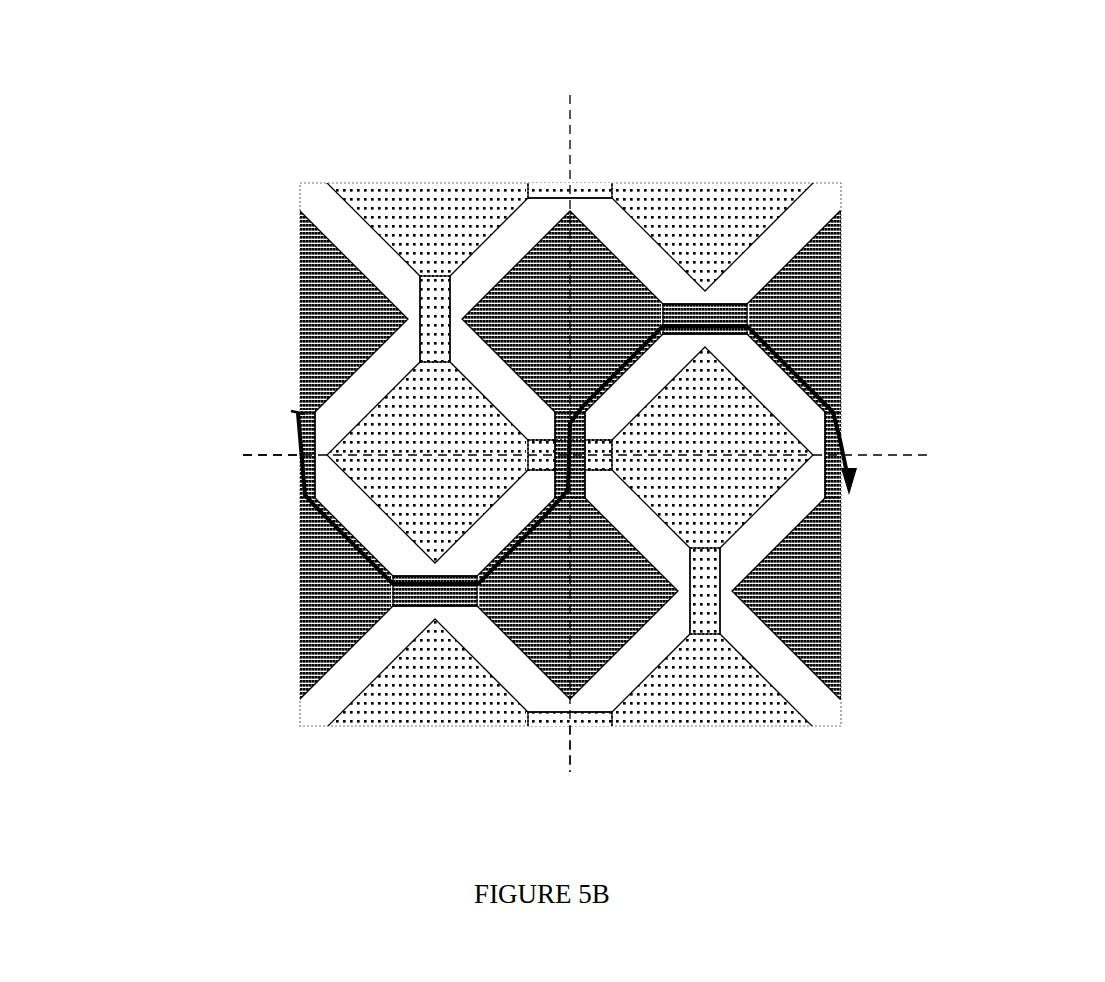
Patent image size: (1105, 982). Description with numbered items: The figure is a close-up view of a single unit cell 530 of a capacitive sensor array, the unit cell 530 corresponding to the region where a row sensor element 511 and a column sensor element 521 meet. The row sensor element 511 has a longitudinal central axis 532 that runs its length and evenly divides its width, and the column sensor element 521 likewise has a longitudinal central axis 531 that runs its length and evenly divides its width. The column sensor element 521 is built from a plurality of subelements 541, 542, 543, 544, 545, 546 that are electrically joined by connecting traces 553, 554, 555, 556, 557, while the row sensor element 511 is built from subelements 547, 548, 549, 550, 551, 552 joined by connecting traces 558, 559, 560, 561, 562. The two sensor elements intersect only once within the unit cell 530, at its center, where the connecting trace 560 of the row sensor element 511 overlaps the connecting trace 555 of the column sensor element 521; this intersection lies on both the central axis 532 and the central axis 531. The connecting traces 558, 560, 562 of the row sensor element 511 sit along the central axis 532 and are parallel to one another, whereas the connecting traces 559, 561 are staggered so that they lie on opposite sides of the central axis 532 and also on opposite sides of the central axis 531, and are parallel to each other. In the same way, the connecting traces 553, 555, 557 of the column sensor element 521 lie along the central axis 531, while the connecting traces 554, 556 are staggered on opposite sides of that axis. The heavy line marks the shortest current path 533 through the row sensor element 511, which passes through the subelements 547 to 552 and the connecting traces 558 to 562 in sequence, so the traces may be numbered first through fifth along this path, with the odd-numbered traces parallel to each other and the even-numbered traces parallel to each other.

The unit cell 530 is at (288, 183).
The longitudinal central axis 531 is at (572, 78).
The longitudinal central axis 532 is at (924, 457).
The row sensor element 511 is at (236, 457).
The column sensor element 521 is at (567, 764).
The shortest current path 533 is at (326, 546).
The subelement 541 is at (688, 221).
The subelement 542 is at (418, 221).
The subelement 543 is at (418, 439).
The subelement 544 is at (690, 439).
The subelement 545 is at (693, 711).
The subelement 546 is at (418, 711).
The subelement 547 is at (323, 327).
The subelement 548 is at (323, 597).
The subelement 549 is at (509, 597).
The subelement 550 is at (508, 327).
The subelement 551 is at (797, 327).
The subelement 552 is at (797, 599).
The connecting trace 553 is at (604, 180).
The connecting trace 554 is at (424, 275).
The connecting trace 555 is at (614, 463).
The connecting trace 556 is at (722, 634).
The connecting trace 557 is at (614, 720).
The connecting trace 558 is at (286, 429).
The connecting trace 559 is at (388, 609).
The connecting trace 560 is at (580, 506).
The connecting trace 561 is at (742, 306).
The connecting trace 562 is at (845, 427).